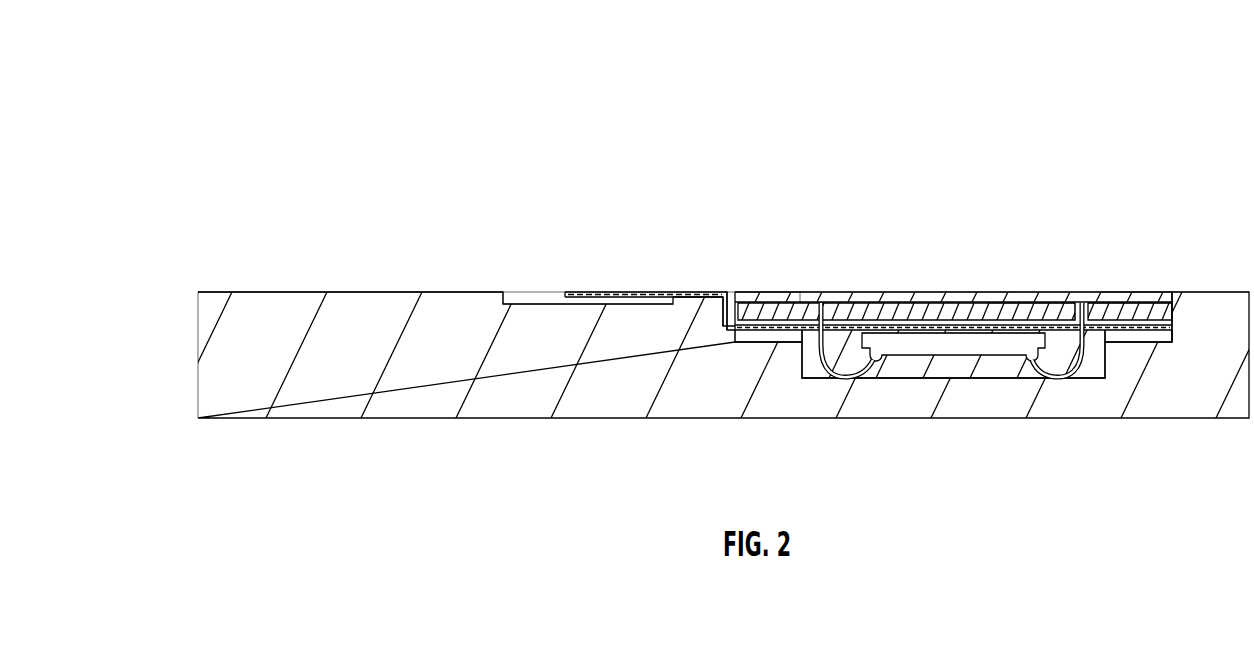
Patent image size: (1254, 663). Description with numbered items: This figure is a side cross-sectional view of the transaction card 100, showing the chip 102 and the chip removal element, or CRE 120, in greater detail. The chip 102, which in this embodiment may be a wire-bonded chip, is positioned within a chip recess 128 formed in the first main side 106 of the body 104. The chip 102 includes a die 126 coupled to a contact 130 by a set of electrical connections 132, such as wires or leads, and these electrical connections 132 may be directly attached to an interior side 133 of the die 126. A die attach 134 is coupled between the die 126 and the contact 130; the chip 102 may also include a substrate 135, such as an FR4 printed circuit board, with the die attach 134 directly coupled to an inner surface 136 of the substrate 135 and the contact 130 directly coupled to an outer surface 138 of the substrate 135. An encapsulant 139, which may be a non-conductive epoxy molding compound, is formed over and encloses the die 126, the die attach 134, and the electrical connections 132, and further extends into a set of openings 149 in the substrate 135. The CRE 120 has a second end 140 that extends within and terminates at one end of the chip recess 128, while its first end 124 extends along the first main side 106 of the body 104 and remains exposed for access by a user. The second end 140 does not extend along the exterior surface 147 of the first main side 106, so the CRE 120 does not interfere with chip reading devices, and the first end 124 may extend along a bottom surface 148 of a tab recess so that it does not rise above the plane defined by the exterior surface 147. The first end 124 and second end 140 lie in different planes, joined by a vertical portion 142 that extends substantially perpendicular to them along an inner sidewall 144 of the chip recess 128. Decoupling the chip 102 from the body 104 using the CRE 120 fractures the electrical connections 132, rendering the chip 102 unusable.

The electronic assembly 100 is at (805, 130).
The chip 102 is at (924, 273).
The body 104 is at (399, 388).
The first main side 106 is at (320, 290).
The CRE 120 is at (757, 314).
The first end 124 is at (602, 308).
The die 126 is at (973, 328).
The chip recess 128 is at (782, 339).
The contact 130 is at (1163, 285).
The electrical connections 132 is at (1069, 354).
The interior side 133 is at (987, 361).
The die attach 134 is at (888, 337).
The substrate 135 is at (856, 298).
The inner surface 136 is at (1022, 318).
The outer surface 138 is at (791, 299).
The encapsulant 139 is at (1091, 369).
The second end 140 is at (1157, 347).
The vertical portion 142 is at (721, 307).
The inner sidewall 144 is at (733, 337).
The exterior surface 147 is at (250, 291).
The bottom surface 148 is at (520, 302).
The openings 149 is at (1098, 300).